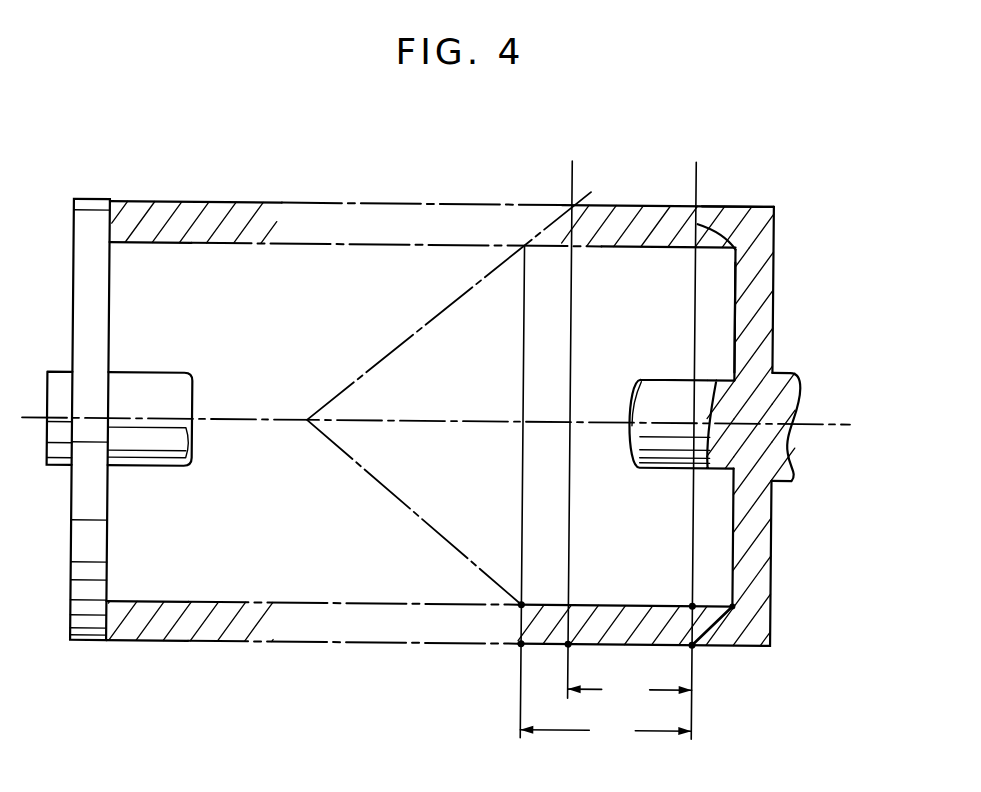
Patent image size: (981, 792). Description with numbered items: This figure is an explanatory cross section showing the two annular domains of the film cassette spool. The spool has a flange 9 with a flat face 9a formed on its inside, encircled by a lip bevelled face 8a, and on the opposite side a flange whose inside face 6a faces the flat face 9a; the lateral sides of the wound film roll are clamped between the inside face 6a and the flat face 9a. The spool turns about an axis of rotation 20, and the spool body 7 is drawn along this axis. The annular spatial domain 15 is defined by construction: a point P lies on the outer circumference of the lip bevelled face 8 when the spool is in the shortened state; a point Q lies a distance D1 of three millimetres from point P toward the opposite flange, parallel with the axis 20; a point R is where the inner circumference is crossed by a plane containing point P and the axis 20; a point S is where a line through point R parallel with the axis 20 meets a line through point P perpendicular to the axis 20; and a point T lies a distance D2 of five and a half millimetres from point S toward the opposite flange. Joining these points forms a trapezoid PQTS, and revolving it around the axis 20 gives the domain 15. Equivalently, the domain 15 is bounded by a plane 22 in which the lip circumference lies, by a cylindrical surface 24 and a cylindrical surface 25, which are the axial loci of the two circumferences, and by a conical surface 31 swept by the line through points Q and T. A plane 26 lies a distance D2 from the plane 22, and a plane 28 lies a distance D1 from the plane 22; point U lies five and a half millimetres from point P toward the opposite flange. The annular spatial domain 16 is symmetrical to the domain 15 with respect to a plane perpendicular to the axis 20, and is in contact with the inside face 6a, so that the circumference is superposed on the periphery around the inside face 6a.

The inside face 6a is at (108, 533).
The annular spatial domain 16 is at (184, 204).
The cylindrical surface 24 is at (321, 604).
The cylindrical surface 25 is at (318, 643).
The annular spatial domain 15 is at (608, 204).
The lip bevelled face 8 is at (728, 204).
The lip bevelled face 8a is at (698, 228).
The flange 9 is at (757, 204).
The flat face 9a is at (734, 306).
The axis of rotation 20 is at (831, 421).
The shaft 7 is at (662, 472).
The plane 22 is at (700, 510).
The conical surface 31 is at (368, 370).
The plane 26 is at (523, 362).
The plane 28 is at (570, 487).
The point T is at (523, 604).
The point S is at (694, 604).
The point R is at (734, 604).
The point U is at (523, 643).
The point Q is at (570, 643).
The point P is at (694, 643).
The distance D1 is at (630, 690).
The distance D2 is at (605, 731).